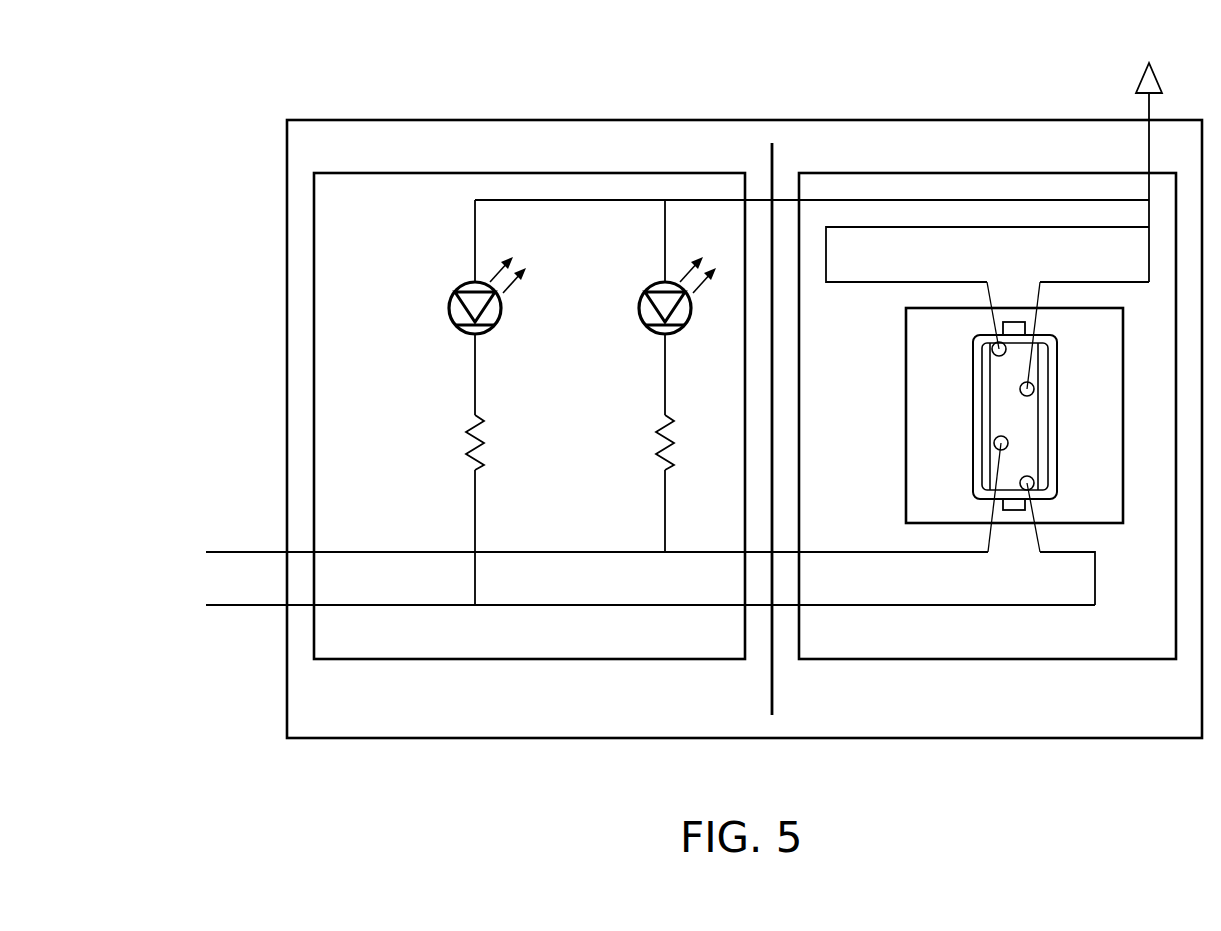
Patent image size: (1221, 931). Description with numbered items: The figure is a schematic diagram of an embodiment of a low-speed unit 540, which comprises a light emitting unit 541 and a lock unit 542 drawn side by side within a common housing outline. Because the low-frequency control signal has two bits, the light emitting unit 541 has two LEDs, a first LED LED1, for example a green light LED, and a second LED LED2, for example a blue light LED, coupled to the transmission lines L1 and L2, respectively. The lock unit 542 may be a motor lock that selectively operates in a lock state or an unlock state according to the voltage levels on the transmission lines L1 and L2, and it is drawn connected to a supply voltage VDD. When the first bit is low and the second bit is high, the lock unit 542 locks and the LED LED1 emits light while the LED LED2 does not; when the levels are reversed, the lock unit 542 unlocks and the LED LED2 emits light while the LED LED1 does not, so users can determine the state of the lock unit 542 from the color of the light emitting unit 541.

The low-speed unit 540 is at (771, 739).
The light emitting unit 541 is at (731, 445).
The lock unit 542 is at (987, 660).
The first light emitting diode LED1 is at (449, 306).
The second light emitting diode LED2 is at (639, 306).
The first transmission line L1 is at (234, 605).
The second transmission line L2 is at (234, 552).
The supply voltage VDD is at (1150, 159).